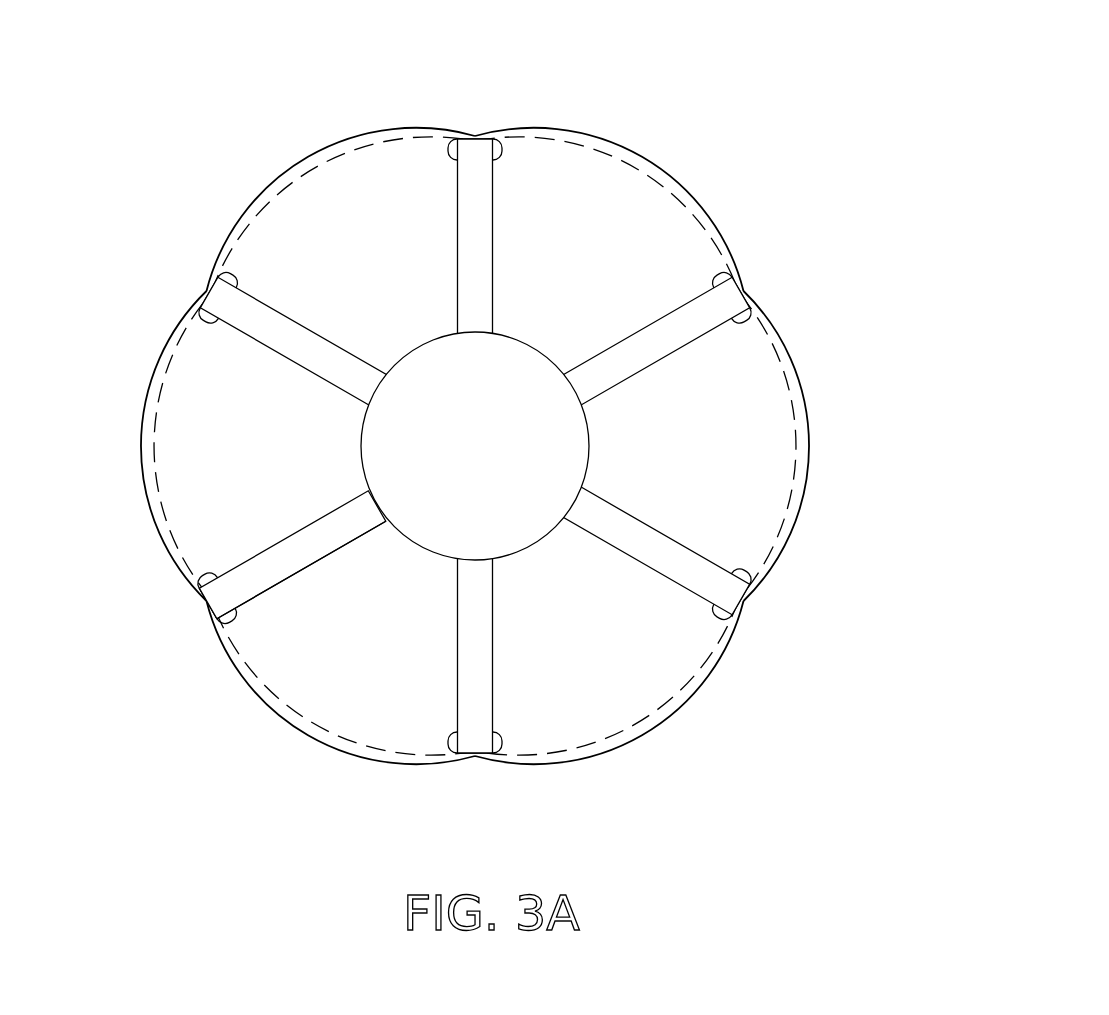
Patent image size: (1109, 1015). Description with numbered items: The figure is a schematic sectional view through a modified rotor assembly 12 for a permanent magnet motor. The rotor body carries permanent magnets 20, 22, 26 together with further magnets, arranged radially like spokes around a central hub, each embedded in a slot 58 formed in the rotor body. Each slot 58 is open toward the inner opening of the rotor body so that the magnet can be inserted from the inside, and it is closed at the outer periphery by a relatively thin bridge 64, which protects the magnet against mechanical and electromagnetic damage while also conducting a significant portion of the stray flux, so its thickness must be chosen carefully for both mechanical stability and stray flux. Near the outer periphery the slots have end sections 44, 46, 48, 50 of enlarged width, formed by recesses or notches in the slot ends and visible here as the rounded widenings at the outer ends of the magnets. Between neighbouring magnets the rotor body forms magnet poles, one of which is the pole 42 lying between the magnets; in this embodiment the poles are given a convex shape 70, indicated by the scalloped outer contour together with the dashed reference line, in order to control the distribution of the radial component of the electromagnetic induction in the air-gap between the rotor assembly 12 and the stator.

The rotor assembly 12 is at (668, 91).
The permanent magnet 20 is at (656, 346).
The permanent magnet 22 is at (485, 210).
The permanent magnet 26 is at (282, 555).
The magnet pole 42 is at (450, 143).
The end section 44 is at (750, 310).
The end section 46 is at (752, 575).
The end section 48 is at (498, 748).
The end section 50 is at (199, 583).
The slot 58 is at (284, 604).
The bridge 64 is at (211, 620).
The convex shape 70 is at (692, 200).